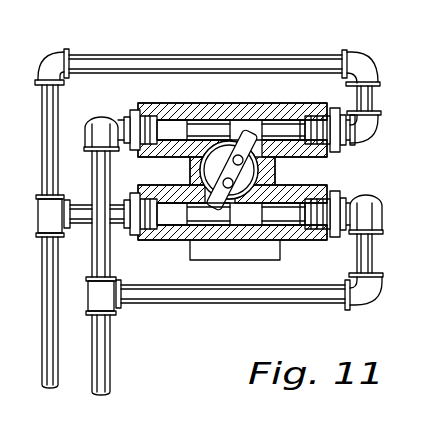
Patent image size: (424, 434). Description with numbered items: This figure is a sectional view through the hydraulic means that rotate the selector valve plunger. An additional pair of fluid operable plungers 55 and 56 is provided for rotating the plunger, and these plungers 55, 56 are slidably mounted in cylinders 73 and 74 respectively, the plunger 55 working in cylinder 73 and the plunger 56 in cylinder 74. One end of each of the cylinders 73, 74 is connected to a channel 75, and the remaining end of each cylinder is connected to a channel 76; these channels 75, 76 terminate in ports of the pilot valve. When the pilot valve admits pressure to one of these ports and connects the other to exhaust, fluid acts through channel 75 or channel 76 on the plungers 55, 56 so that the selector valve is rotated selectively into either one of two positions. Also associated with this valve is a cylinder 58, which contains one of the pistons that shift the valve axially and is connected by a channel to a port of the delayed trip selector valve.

The plunger 55 is at (287, 130).
The plunger 56 is at (260, 214).
The cylinder 58 is at (9, 106).
The cylinder 73 is at (161, 228).
The cylinder 74 is at (169, 128).
The channel 75 is at (42, 322).
The channel 76 is at (111, 356).